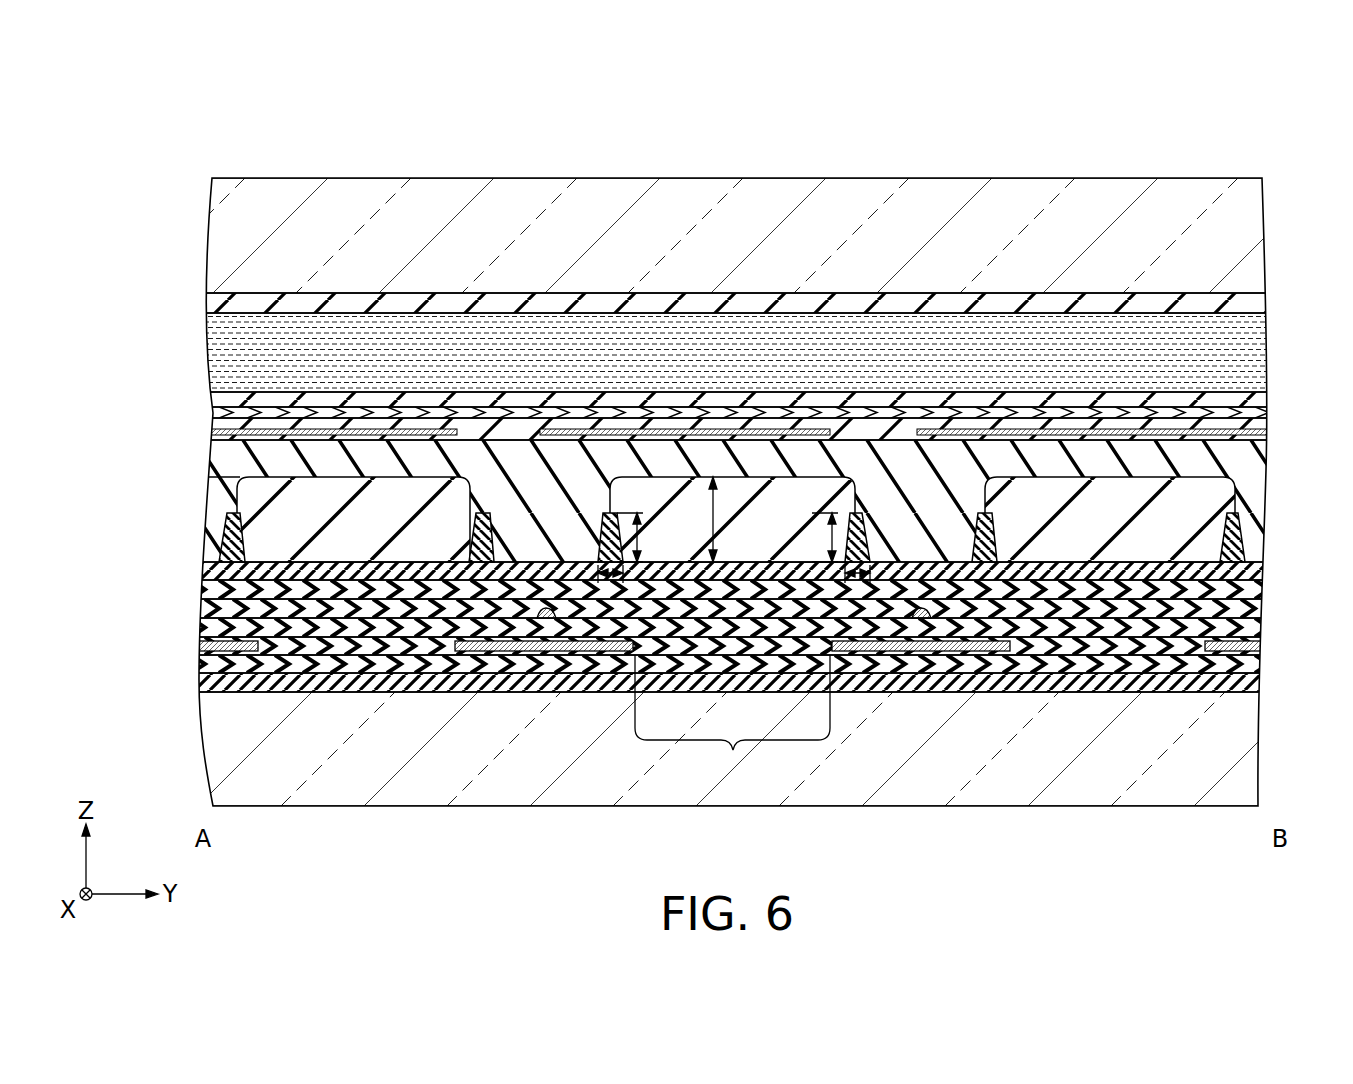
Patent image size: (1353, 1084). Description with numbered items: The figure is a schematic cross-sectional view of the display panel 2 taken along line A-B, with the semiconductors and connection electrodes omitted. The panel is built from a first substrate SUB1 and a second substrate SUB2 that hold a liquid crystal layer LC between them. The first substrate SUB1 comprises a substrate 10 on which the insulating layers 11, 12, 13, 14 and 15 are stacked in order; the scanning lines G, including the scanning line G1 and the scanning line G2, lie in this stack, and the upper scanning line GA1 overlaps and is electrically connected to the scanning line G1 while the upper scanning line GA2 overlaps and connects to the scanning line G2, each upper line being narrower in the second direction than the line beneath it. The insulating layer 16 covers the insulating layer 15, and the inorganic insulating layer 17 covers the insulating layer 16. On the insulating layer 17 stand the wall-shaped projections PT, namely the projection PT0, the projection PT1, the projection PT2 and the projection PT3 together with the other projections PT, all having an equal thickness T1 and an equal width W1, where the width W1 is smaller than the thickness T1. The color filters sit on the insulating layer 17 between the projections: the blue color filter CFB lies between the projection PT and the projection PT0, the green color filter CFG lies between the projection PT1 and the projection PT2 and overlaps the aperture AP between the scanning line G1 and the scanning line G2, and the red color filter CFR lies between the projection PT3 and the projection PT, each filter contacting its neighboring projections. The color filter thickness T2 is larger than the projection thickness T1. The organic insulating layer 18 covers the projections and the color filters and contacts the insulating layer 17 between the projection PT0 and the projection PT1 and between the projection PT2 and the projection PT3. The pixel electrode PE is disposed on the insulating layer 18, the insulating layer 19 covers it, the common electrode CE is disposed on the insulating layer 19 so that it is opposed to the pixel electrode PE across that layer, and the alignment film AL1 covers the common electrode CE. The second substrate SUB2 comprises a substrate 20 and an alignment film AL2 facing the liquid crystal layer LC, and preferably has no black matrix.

The display panel 2 is at (1177, 140).
The substrate 20 is at (1300, 238).
The alignment film AL2 is at (1300, 305).
The liquid crystal layer LC is at (1300, 345).
The alignment film AL1 is at (1300, 386).
The common electrode CE is at (1300, 411).
The insulating layer 19 is at (1300, 437).
The insulating layer 18 is at (1300, 476).
The projection PT is at (183, 541).
The insulating layer 17 is at (1300, 560).
The insulating layer 16 is at (1300, 582).
The insulating layer 15 is at (1300, 605).
The insulating layer 14 is at (1300, 628).
The insulating layer 13 is at (1300, 652).
The insulating layer 12 is at (1300, 678).
The insulating layer 11 is at (1300, 700).
The substrate 10 is at (1300, 758).
The second substrate SUB2 is at (186, 277).
The first substrate SUB1 is at (186, 484).
The pixel electrode PE is at (178, 437).
The blue color filter CFB is at (335, 495).
The green color filter CFG is at (782, 505).
The red color filter CFR is at (1112, 497).
The projection PT0 is at (478, 535).
The projection PT1 is at (620, 513).
The projection PT2 is at (857, 513).
The projection PT3 is at (1000, 535).
The thickness of projections T1 is at (636, 538).
The thickness of color filter T2 is at (718, 520).
The width of projections W1 is at (608, 585).
The scanning line G is at (210, 648).
The scanning line G1 is at (500, 652).
The scanning line G2 is at (968, 652).
The upper scanning line GA1 is at (545, 618).
The upper scanning line GA2 is at (918, 618).
The aperture AP is at (732, 720).